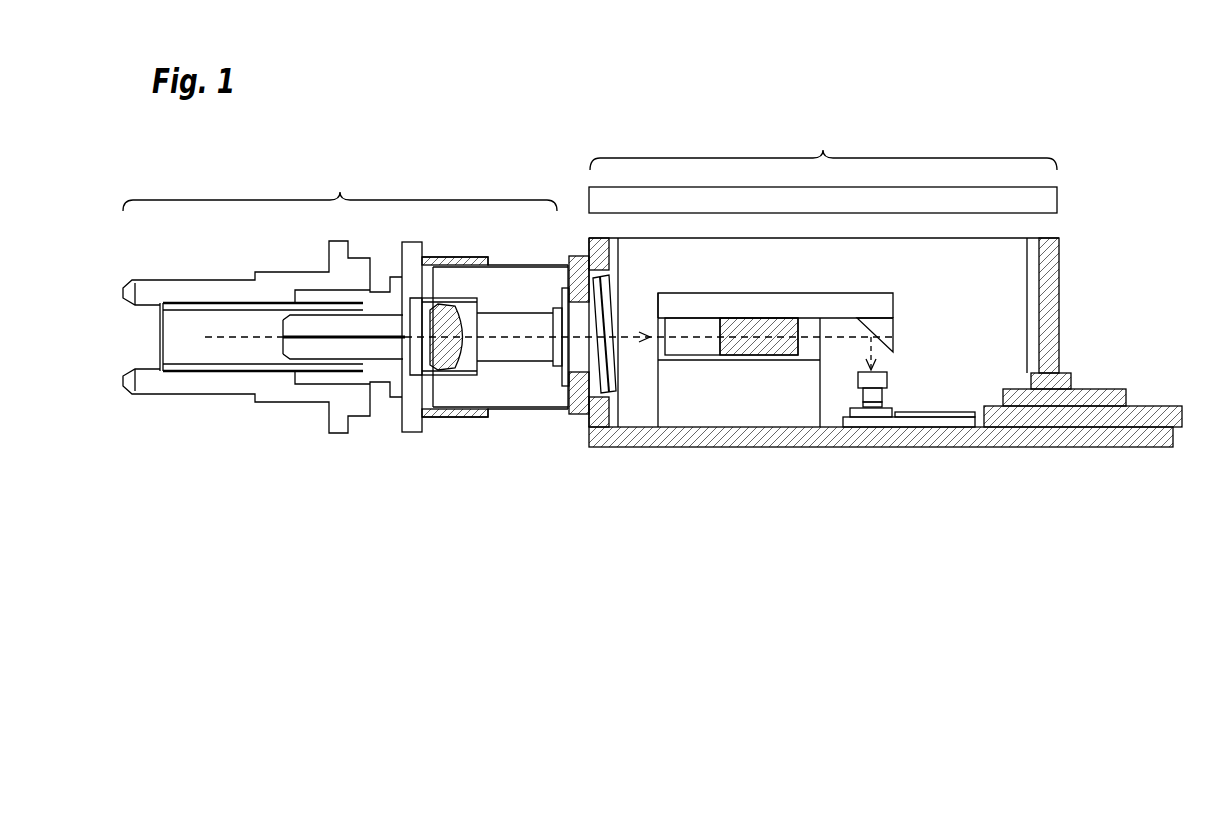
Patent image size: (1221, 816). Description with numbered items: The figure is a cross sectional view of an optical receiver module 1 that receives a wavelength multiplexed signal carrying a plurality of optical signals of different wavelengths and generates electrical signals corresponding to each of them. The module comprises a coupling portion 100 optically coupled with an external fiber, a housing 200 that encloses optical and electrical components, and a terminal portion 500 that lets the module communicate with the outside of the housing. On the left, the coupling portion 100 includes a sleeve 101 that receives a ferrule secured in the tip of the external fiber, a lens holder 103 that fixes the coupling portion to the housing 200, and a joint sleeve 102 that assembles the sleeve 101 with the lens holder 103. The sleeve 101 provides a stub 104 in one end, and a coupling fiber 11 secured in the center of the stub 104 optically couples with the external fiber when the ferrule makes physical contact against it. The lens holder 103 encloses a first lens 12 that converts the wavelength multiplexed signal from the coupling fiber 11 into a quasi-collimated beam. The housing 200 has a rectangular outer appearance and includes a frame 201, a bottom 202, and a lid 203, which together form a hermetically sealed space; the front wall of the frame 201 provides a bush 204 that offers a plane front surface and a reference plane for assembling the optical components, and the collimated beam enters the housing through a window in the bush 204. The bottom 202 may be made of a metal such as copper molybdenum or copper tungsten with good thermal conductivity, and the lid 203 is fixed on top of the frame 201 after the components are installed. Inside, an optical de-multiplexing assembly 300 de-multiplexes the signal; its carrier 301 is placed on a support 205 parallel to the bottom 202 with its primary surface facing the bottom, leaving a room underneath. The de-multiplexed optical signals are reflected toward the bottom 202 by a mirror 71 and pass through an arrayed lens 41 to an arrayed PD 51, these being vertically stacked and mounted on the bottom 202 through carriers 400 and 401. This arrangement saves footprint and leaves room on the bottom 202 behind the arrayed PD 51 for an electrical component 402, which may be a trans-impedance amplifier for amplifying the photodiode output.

The optical receiver module 1 is at (582, 148).
The coupling portion 100 is at (340, 185).
The sleeve 101 is at (222, 392).
The stub 104 is at (326, 355).
The coupling fiber 11 is at (373, 340).
The joint sleeve 102 is at (443, 412).
The first lens 12 is at (448, 315).
The lens holder 103 is at (525, 398).
The bush 204 is at (583, 412).
The frame 201 is at (595, 237).
The lid 203 is at (1065, 200).
The housing 200 is at (823, 145).
The bottom 202 is at (745, 437).
The support 205 is at (670, 402).
The optical de-multiplexing assembly 300 is at (822, 265).
The carrier 301 is at (852, 296).
The mirror 71 is at (888, 331).
The arrayed lens 41 is at (858, 378).
The arrayed PD 51 is at (862, 403).
The carrier 400 is at (856, 412).
The carrier 401 is at (942, 428).
The electrical component 402 is at (930, 412).
The terminal portion 500 is at (1105, 388).